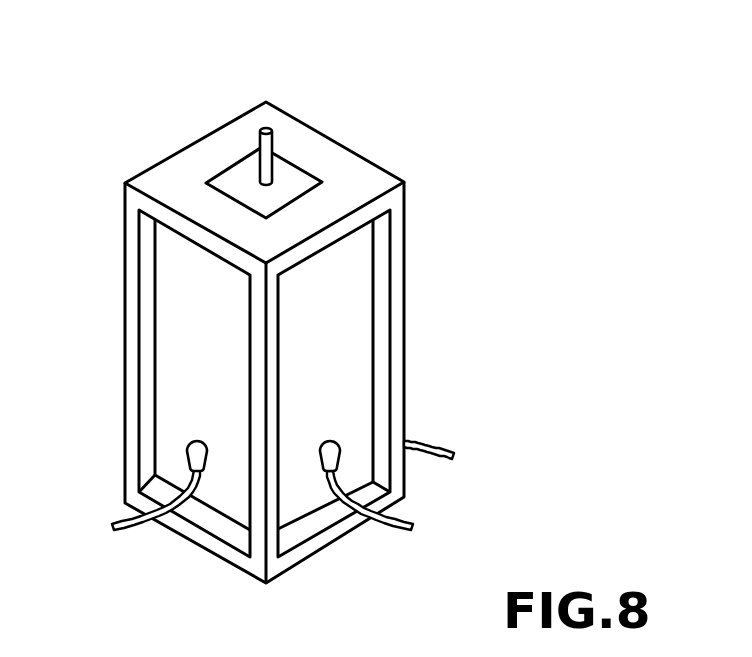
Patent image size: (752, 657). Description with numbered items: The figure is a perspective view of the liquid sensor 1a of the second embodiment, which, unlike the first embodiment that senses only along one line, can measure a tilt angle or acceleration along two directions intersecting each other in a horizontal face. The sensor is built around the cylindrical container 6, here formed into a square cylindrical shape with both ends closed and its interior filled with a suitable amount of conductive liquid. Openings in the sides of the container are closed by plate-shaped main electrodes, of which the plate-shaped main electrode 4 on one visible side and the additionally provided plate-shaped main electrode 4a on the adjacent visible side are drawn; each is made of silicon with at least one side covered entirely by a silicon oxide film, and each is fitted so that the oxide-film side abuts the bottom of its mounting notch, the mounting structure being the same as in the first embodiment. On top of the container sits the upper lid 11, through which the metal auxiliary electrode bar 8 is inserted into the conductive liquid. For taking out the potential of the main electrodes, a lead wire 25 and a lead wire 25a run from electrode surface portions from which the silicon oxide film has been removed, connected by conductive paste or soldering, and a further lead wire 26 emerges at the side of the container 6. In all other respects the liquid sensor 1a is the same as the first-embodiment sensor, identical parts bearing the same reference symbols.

The liquid sensor 1a is at (317, 90).
The plate-shaped main electrode 4 is at (167, 339).
The plate-shaped main electrode 4a is at (365, 337).
The cylindrical container 6 is at (403, 203).
The metal auxiliary electrode bar 8 is at (260, 137).
The upper lid 11 is at (307, 181).
The lead wire 25 is at (115, 520).
The lead wire 25a is at (405, 517).
The lead wire 26 is at (433, 447).